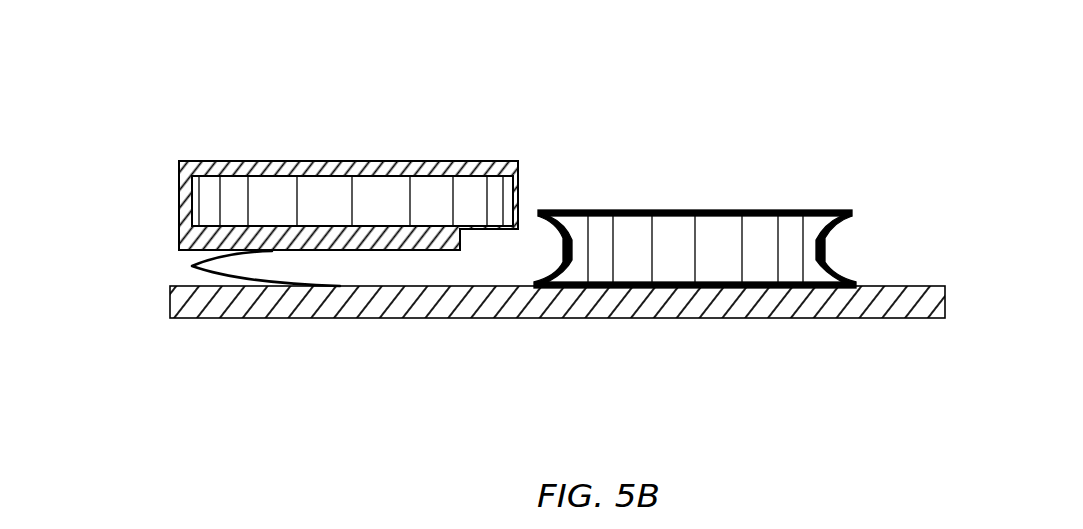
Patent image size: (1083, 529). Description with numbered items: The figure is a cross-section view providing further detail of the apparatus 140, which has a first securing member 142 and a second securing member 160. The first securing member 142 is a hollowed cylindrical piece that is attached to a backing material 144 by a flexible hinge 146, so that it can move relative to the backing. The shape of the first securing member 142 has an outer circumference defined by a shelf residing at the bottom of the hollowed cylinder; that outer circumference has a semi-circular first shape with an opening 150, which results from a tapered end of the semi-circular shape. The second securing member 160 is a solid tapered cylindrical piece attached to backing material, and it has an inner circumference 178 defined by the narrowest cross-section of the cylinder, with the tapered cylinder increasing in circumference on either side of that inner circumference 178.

The apparatus 140 is at (524, 235).
The first securing member 142 is at (313, 148).
The backing material 144 is at (498, 322).
The flexible hinge 146 is at (192, 266).
The opening 150 is at (483, 233).
The second securing member 160 is at (753, 212).
The inner circumference 178 is at (827, 245).